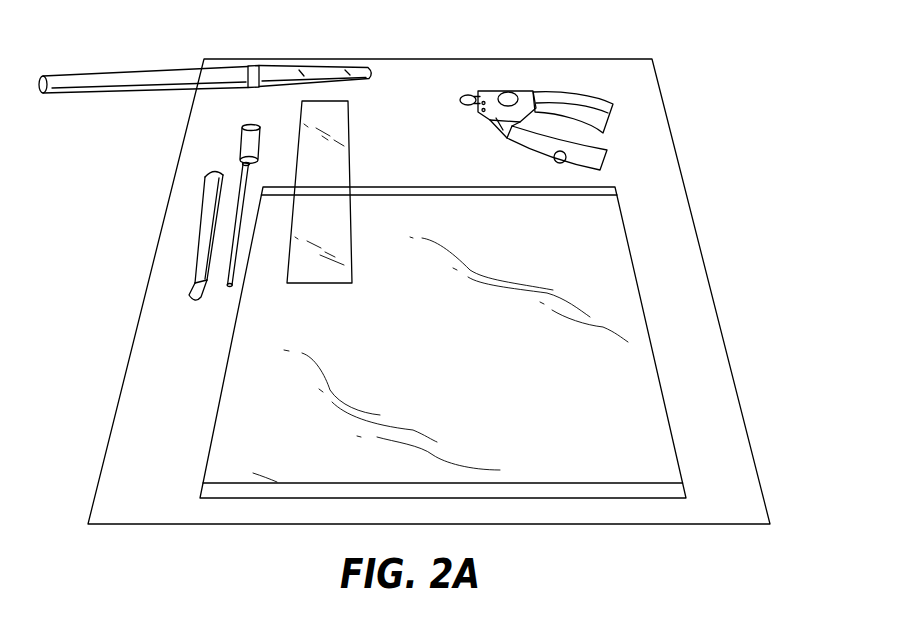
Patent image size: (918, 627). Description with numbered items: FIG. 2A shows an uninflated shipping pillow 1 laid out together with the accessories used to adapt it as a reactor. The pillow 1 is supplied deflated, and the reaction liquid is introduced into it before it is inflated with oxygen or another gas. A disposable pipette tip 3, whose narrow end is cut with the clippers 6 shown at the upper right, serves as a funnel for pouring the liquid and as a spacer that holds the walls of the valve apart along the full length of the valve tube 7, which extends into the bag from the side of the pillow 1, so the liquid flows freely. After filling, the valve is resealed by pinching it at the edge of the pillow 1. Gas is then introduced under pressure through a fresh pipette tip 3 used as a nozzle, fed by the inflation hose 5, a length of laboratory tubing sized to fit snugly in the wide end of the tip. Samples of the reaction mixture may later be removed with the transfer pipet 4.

The pillow 1 is at (635, 390).
The pipette tip 3 is at (305, 65).
The transfer pipet 4 is at (242, 143).
The inflation hose 5 is at (117, 71).
The clippers 6 is at (612, 115).
The valve tube 7 is at (330, 190).